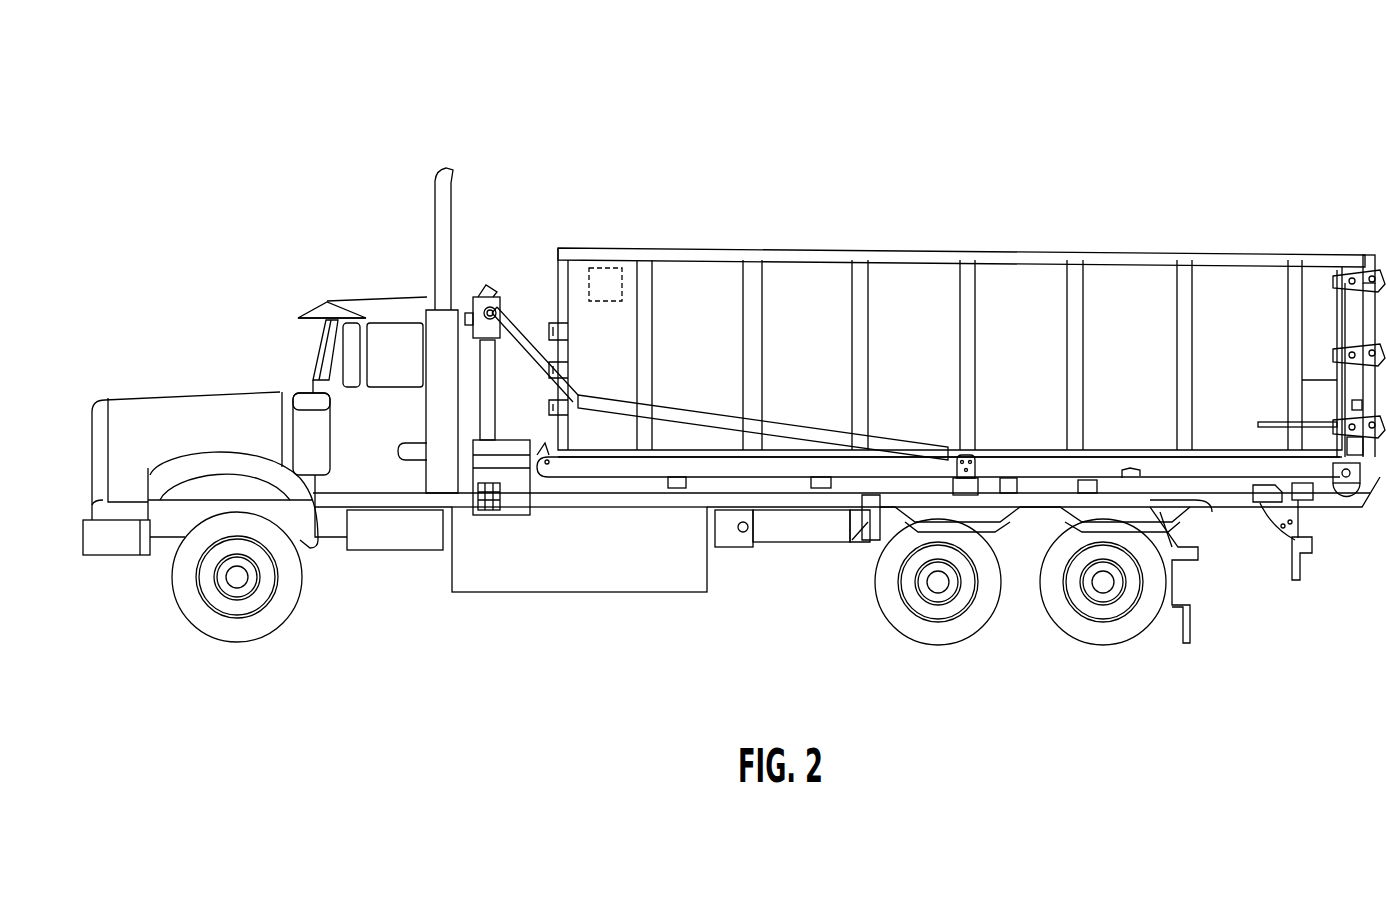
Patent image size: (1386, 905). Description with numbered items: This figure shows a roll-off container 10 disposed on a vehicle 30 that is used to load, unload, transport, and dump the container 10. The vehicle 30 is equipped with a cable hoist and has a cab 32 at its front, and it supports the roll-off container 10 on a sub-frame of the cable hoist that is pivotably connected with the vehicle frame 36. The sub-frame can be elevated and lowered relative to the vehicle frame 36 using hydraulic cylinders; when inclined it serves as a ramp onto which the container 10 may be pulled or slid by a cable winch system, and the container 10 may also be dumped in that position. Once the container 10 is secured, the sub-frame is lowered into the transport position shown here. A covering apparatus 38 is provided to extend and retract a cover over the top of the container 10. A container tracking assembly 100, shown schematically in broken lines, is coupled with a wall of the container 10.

The roll-off container 10 is at (1133, 229).
The vehicle 30 is at (985, 229).
The cab 32 is at (383, 211).
The vehicle frame 36 is at (1224, 489).
The covering apparatus 38 is at (677, 400).
The container tracking assembly 100 is at (606, 283).